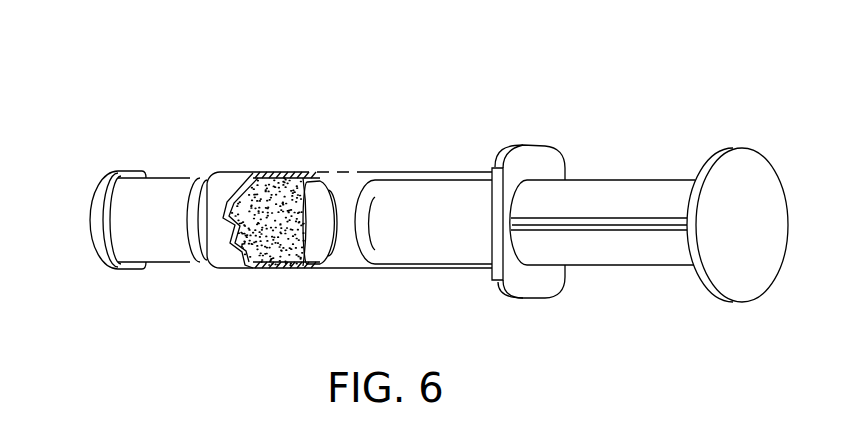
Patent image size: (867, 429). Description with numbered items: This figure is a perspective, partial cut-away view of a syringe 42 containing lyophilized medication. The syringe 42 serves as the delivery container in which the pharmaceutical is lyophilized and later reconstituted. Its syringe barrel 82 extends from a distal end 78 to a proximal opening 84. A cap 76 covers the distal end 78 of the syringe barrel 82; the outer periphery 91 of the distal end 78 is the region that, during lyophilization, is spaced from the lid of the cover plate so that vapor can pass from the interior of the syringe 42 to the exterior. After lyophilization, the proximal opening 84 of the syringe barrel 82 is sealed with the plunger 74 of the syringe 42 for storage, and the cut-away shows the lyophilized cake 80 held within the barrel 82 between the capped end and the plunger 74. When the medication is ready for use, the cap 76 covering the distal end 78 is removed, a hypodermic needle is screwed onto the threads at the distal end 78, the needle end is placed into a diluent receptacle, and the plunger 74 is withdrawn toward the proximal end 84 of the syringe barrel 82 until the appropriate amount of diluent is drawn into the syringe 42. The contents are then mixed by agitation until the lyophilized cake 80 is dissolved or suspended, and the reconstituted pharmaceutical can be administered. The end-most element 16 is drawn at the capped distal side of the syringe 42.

The cap 16 is at (90, 218).
The cap 76 is at (105, 175).
The distal end 78 is at (105, 268).
The outer periphery 91 is at (128, 170).
The plug 80 is at (280, 192).
The syringe barrel 82 is at (360, 268).
The proximal opening 84 is at (530, 298).
The plunger 74 is at (613, 180).
The syringe 42 is at (520, 98).